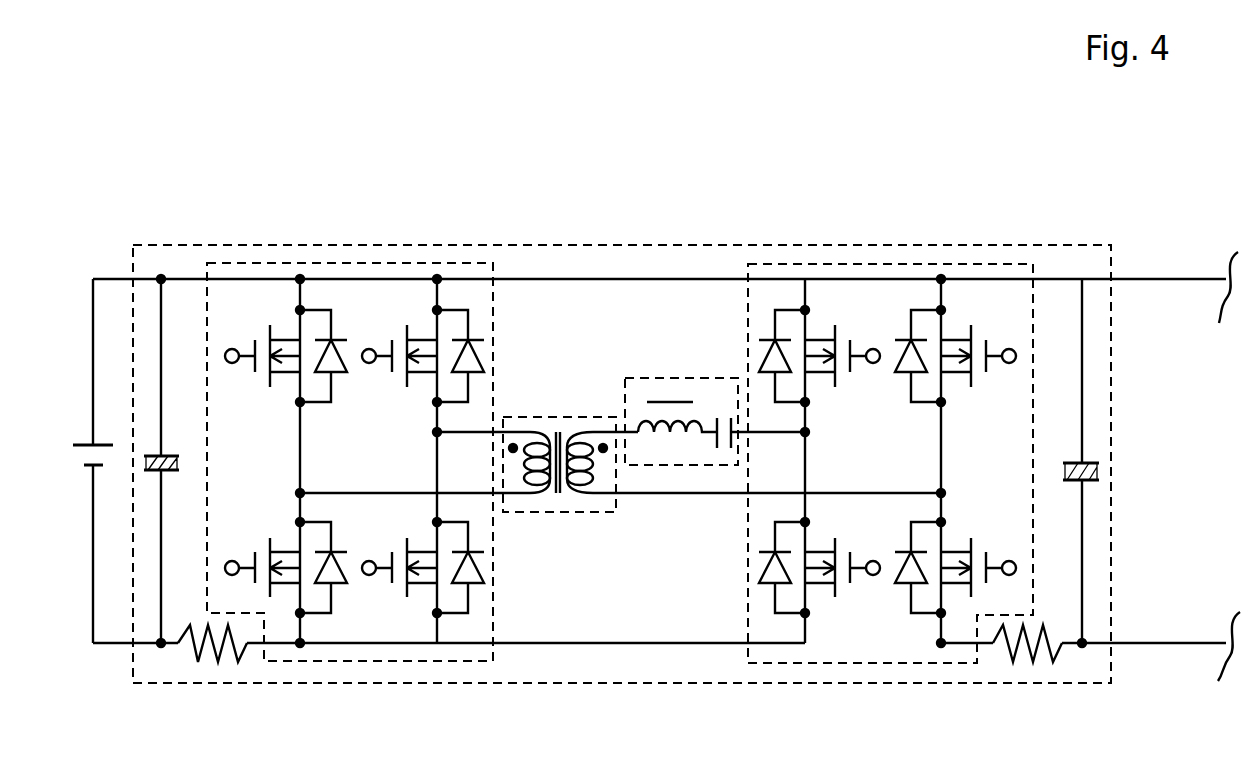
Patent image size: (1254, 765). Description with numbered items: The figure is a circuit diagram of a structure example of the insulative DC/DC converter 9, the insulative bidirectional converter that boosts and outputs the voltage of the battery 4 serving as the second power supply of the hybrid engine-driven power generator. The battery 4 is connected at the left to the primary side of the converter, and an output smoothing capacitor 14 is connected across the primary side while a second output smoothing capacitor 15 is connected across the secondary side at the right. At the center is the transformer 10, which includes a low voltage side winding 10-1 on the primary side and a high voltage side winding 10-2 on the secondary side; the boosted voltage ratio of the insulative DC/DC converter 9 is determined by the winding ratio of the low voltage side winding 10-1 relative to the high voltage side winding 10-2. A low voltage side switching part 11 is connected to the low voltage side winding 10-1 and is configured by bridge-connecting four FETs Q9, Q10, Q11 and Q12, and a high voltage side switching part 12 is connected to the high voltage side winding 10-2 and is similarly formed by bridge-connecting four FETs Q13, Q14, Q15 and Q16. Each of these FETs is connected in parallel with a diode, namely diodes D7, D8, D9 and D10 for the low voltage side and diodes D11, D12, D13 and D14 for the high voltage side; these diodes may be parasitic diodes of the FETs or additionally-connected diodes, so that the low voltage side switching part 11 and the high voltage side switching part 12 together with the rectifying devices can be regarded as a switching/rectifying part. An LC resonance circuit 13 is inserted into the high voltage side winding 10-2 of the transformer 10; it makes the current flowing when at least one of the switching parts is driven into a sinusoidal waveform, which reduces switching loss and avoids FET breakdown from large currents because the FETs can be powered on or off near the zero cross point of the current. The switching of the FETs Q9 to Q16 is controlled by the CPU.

The battery 4 is at (84, 435).
The insulative DC/DC converter 9 is at (540, 245).
The transformer 10 is at (556, 418).
The low voltage side winding 10-1 is at (536, 503).
The high voltage side winding 10-2 is at (582, 503).
The low voltage side switching part 11 is at (468, 262).
The high voltage side switching part 12 is at (746, 628).
The LC resonance circuit 13 is at (660, 378).
The capacitor 14 is at (172, 448).
The capacitor 15 is at (1073, 454).
The FET Q9 is at (270, 308).
The FET Q10 is at (407, 308).
The FET Q11 is at (276, 605).
The FET Q12 is at (413, 605).
The FET Q13 is at (831, 312).
The FET Q14 is at (972, 312).
The FET Q15 is at (830, 607).
The FET Q16 is at (966, 607).
The diode D7 is at (340, 382).
The diode D8 is at (488, 355).
The diode D9 is at (347, 560).
The diode D10 is at (480, 590).
The diode D11 is at (757, 343).
The diode D12 is at (903, 380).
The diode D13 is at (758, 573).
The diode D14 is at (895, 564).